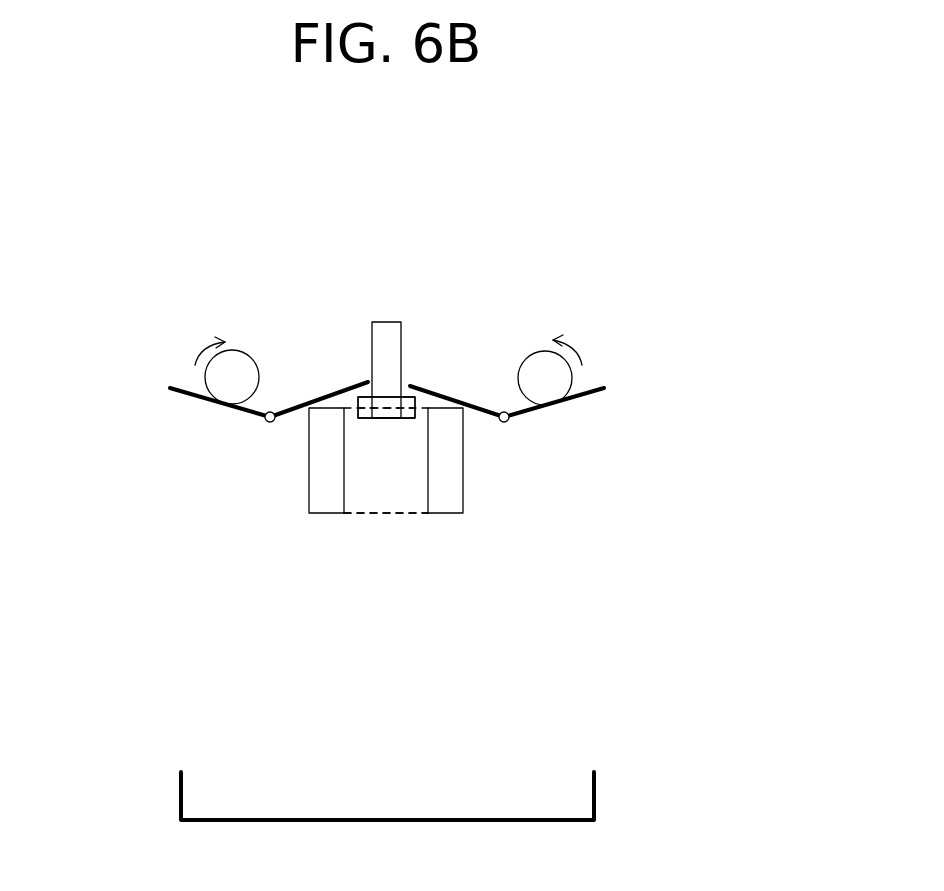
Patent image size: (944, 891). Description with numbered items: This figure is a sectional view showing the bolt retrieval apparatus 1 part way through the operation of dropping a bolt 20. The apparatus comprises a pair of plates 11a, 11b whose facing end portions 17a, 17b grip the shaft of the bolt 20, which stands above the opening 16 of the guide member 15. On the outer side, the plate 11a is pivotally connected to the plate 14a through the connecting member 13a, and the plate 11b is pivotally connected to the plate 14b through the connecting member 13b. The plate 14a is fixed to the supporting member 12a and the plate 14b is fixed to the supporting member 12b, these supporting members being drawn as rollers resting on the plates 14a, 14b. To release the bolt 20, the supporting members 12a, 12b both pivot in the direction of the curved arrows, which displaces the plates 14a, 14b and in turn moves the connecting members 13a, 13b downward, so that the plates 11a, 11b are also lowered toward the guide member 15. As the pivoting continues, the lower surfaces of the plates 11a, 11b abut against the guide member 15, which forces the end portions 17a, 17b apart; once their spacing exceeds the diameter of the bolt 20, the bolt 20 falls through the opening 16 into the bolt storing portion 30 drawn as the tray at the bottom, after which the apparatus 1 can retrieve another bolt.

The bolt retrieval apparatus 1 is at (548, 188).
The plate 11a is at (455, 400).
The plate 11b is at (320, 400).
The supporting member 12a is at (538, 352).
The supporting member 12b is at (240, 350).
The connecting member 13a is at (504, 422).
The connecting member 13b is at (270, 422).
The plate 14a is at (593, 390).
The plate 14b is at (183, 390).
The guide member 15 is at (447, 513).
The opening 16 is at (368, 528).
The end portion 17a is at (412, 396).
The end portion 17b is at (360, 397).
The bolt 20 is at (383, 322).
The bolt storing portion 30 is at (597, 785).